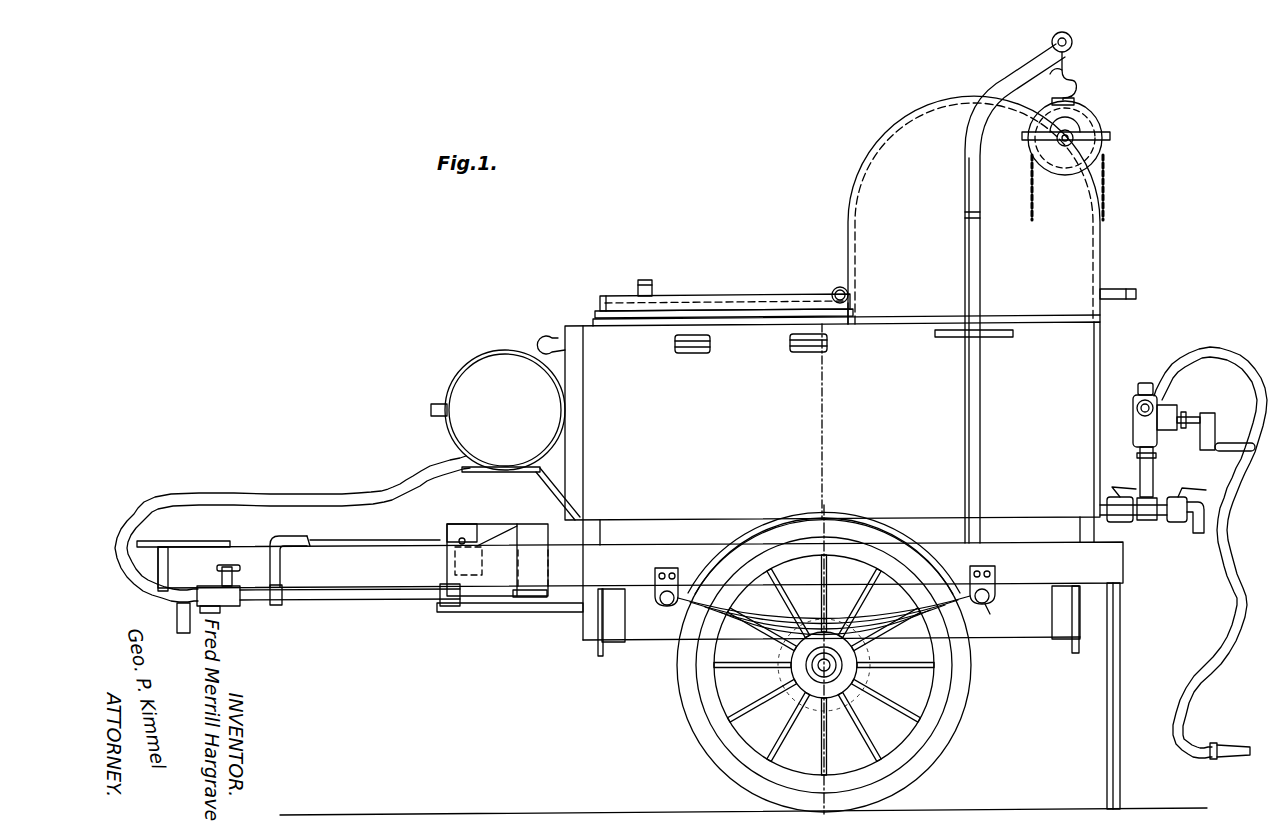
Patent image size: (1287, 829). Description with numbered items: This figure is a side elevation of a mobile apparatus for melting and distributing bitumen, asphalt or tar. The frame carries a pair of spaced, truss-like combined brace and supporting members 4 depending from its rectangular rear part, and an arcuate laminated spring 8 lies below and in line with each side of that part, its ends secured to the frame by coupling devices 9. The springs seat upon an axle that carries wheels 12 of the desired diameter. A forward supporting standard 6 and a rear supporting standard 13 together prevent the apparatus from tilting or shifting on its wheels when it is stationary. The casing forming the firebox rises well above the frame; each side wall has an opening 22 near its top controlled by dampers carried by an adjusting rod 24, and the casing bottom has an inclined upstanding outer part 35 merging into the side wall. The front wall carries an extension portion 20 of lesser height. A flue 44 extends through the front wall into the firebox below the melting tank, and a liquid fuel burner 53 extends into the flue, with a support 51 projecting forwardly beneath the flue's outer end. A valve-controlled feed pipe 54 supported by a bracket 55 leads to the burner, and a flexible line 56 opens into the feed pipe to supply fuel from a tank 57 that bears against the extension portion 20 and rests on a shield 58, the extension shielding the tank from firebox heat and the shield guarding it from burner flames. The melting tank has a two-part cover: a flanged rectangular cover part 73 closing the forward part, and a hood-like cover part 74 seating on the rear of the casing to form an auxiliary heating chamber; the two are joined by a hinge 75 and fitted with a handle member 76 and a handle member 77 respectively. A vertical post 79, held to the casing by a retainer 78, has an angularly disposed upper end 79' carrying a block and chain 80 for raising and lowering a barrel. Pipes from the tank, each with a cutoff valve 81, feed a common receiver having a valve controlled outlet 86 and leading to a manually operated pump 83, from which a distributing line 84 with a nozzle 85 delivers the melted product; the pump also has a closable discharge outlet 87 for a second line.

The combined brace and supporting members 4 is at (618, 625).
The supporting standard 6 is at (178, 614).
The arcuate spring 8 is at (700, 612).
The coupling devices 9 is at (655, 600).
The wheels 12 is at (690, 708).
The supporting standard 13 is at (1118, 666).
The extension portion 20 is at (570, 440).
The opening 22 is at (697, 353).
The adjusting rod 24 is at (539, 333).
The inclined upstanding outer part of bottom 35 is at (988, 618).
The flue 44 is at (567, 597).
The support 51 is at (498, 600).
The liquid fuel burner 53 is at (490, 566).
The feed pipe 54 is at (352, 597).
The bracket 55 is at (281, 562).
The flexible line 56 is at (249, 495).
The tank 57 is at (492, 372).
The shield 58 is at (497, 473).
The cover part 73 is at (746, 303).
The cover part 74 is at (860, 211).
The hinge 75 is at (836, 288).
The handle member 76 is at (653, 288).
The handle member 77 is at (1120, 290).
The retainer 78 is at (990, 337).
The post or standard 79 is at (1015, 293).
The angularly disposed upper end 79' is at (1034, 66).
The block and chain 80 is at (1080, 117).
The cutoff valve 81 is at (1120, 497).
The manually operated pump 83 is at (1143, 430).
The distributing line 84 is at (1236, 591).
The nozzle 85 is at (1228, 743).
The valve controlled outlet 86 is at (1180, 497).
The closable discharge outlet 87 is at (1145, 383).